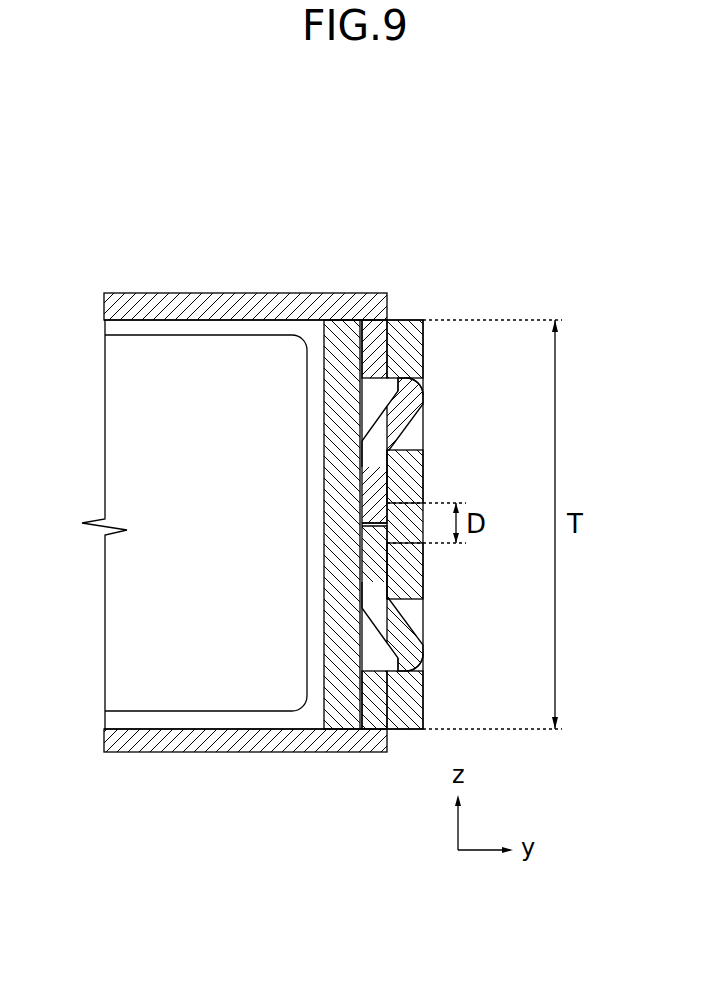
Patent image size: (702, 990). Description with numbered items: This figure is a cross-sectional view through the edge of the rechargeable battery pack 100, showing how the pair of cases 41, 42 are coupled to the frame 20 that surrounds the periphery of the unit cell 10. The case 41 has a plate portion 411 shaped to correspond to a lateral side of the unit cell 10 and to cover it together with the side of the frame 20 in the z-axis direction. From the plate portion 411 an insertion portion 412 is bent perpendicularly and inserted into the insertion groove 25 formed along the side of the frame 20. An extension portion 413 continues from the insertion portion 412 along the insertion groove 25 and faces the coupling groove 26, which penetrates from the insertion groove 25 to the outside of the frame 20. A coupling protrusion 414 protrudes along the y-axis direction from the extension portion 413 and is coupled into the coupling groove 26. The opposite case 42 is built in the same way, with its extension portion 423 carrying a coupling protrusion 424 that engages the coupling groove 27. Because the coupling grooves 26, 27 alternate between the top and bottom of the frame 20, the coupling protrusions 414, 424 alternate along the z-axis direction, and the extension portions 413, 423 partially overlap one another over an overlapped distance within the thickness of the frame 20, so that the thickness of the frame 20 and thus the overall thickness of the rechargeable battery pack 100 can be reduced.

The rechargeable battery pack 100 is at (169, 201).
The unit cell 10 is at (130, 445).
The case 41 is at (205, 293).
The plate portion 411 is at (278, 295).
The insertion portion 412 is at (388, 335).
The extension portion 413 is at (393, 463).
The coupling protrusion 414 is at (423, 433).
The case 42 is at (200, 752).
The extension portion 423 is at (395, 566).
The coupling protrusion 424 is at (423, 615).
The frame 20 is at (423, 697).
The insertion groove 25 is at (371, 735).
The coupling groove 26 is at (423, 395).
The coupling groove 27 is at (423, 652).